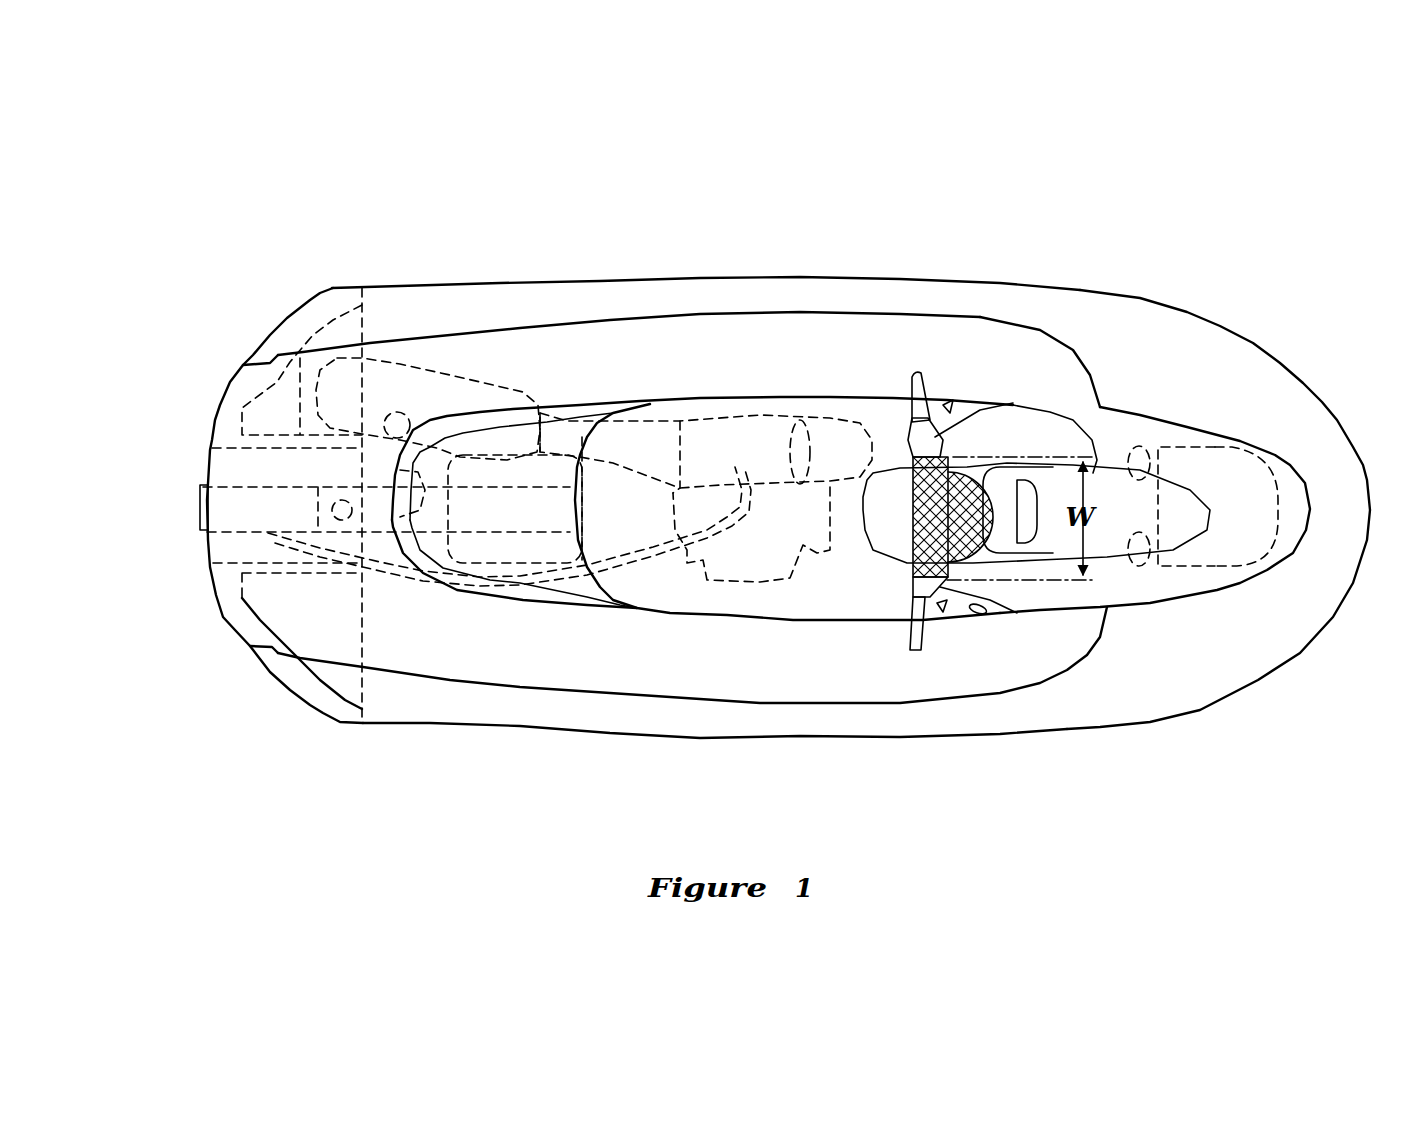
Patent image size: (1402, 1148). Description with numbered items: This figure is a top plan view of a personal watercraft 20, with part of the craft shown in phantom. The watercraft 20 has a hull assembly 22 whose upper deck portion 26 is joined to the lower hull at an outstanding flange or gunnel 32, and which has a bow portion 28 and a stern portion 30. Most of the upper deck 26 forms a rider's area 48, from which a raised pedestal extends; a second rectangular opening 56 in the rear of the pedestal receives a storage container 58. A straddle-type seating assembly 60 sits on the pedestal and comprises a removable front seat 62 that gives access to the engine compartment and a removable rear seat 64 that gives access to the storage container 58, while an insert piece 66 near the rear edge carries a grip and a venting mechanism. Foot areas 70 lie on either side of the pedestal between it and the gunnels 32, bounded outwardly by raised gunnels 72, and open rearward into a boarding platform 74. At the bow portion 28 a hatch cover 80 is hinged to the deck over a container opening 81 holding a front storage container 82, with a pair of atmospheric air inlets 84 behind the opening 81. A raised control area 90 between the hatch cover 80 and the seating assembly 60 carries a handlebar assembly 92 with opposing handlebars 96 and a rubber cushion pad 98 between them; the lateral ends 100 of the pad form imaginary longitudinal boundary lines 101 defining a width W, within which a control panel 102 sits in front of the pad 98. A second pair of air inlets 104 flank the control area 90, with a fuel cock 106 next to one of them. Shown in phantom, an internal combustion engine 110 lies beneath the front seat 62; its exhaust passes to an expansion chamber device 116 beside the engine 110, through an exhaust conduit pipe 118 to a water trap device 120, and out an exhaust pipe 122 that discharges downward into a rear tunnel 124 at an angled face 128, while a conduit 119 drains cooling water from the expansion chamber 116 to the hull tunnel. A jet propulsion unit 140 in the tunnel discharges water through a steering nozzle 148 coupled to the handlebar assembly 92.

The watercraft 20 is at (445, 765).
The hull assembly 22 is at (995, 280).
The upper deck portion 26 is at (1133, 330).
The bow portion 28 is at (1317, 405).
The stern portion 30 is at (273, 328).
The gunnel 32 is at (808, 278).
The rider's area 48 is at (765, 330).
The second generally rectangular opening 56 is at (543, 568).
The storage container 58 is at (497, 565).
The seating assembly 60 is at (661, 388).
The front seat 62 is at (723, 600).
The rear seat 64 is at (605, 600).
The insert piece 66 is at (515, 597).
The foot areas 70 is at (645, 330).
The raised gunnels 72 is at (870, 292).
The boarding platform 74 is at (233, 572).
The hatch cover 80 is at (1215, 583).
The container opening 81 is at (1245, 452).
The front storage container 82 is at (1198, 443).
The atmospheric air inlets 84 is at (1143, 446).
The raised control area 90 is at (1040, 600).
The handlebar assembly 92 is at (910, 660).
The handlebars 96 is at (910, 385).
The cushion pad 98 is at (917, 530).
The lateral ends 100 is at (925, 420).
The longitudinally-extending boundary lines 101 is at (1035, 478).
The control panel 102 is at (1040, 473).
The second pair of air inlets 104 is at (948, 402).
The fuel cock 106 is at (980, 618).
The internal combustion engine 110 is at (762, 590).
The expansion chamber device 116 is at (739, 417).
The exhaust conduit pipe 118 is at (580, 427).
The conduit 119 is at (648, 563).
The water trap device 120 is at (497, 385).
The exhaust pipe 122 is at (420, 418).
The rear tunnel 124 is at (240, 533).
The angled face 128 is at (315, 510).
The jet propulsion unit 140 is at (205, 528).
The steering nozzle 148 is at (200, 500).